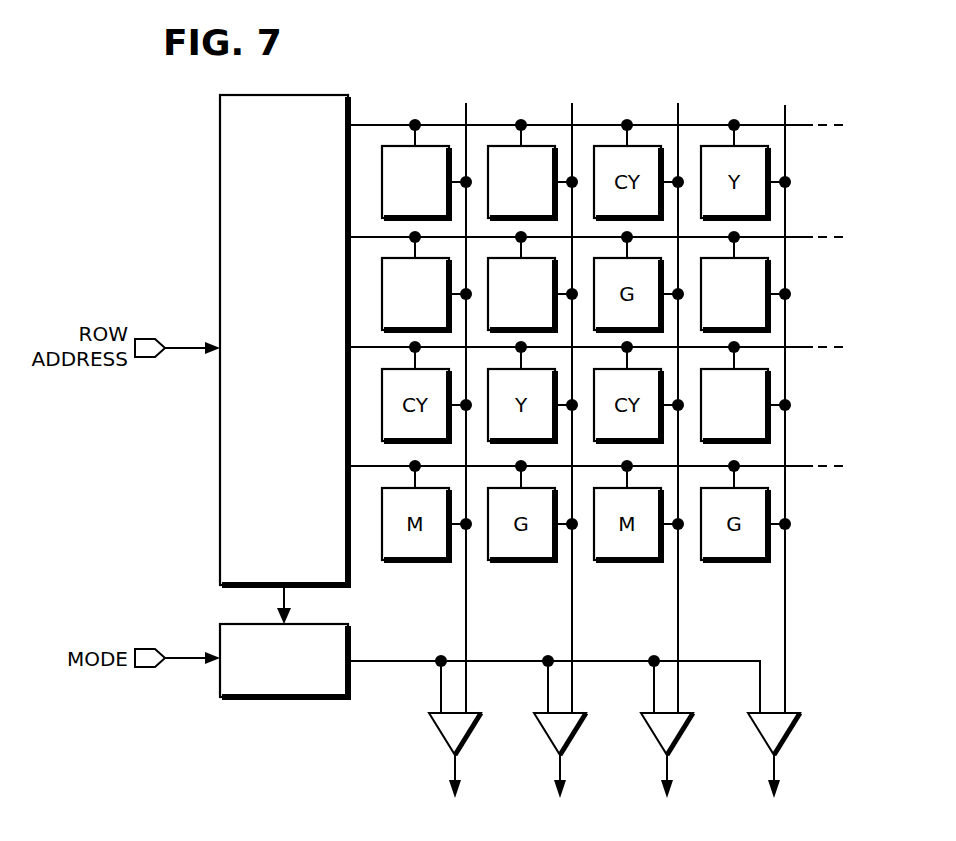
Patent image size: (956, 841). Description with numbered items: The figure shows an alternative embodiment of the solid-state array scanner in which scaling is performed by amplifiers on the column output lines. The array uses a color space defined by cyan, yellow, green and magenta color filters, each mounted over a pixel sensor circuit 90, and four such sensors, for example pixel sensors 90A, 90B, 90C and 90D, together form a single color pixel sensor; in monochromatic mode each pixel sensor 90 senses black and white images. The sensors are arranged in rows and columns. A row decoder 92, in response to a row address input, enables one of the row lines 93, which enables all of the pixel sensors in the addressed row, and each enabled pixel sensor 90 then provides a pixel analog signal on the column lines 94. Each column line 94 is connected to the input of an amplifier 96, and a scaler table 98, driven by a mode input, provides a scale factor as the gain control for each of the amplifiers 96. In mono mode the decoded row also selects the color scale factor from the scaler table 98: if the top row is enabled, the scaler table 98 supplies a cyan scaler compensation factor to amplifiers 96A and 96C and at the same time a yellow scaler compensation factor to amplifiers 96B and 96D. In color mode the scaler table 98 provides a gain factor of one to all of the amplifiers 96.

The pixel sensor circuit 90 is at (757, 272).
The pixel sensor 90A is at (390, 146).
The pixel sensor 90B is at (382, 273).
The pixel sensor 90C is at (530, 146).
The pixel sensor 90D is at (530, 258).
The row decoder 92 is at (324, 95).
The row lines 93 is at (795, 125).
The column lines 94 is at (466, 112).
The amplifier 96 is at (653, 755).
The amplifier 96A is at (470, 735).
The amplifier 96B is at (573, 735).
The amplifier 96C is at (680, 735).
The amplifier 96D is at (787, 738).
The scaler table 98 is at (283, 697).